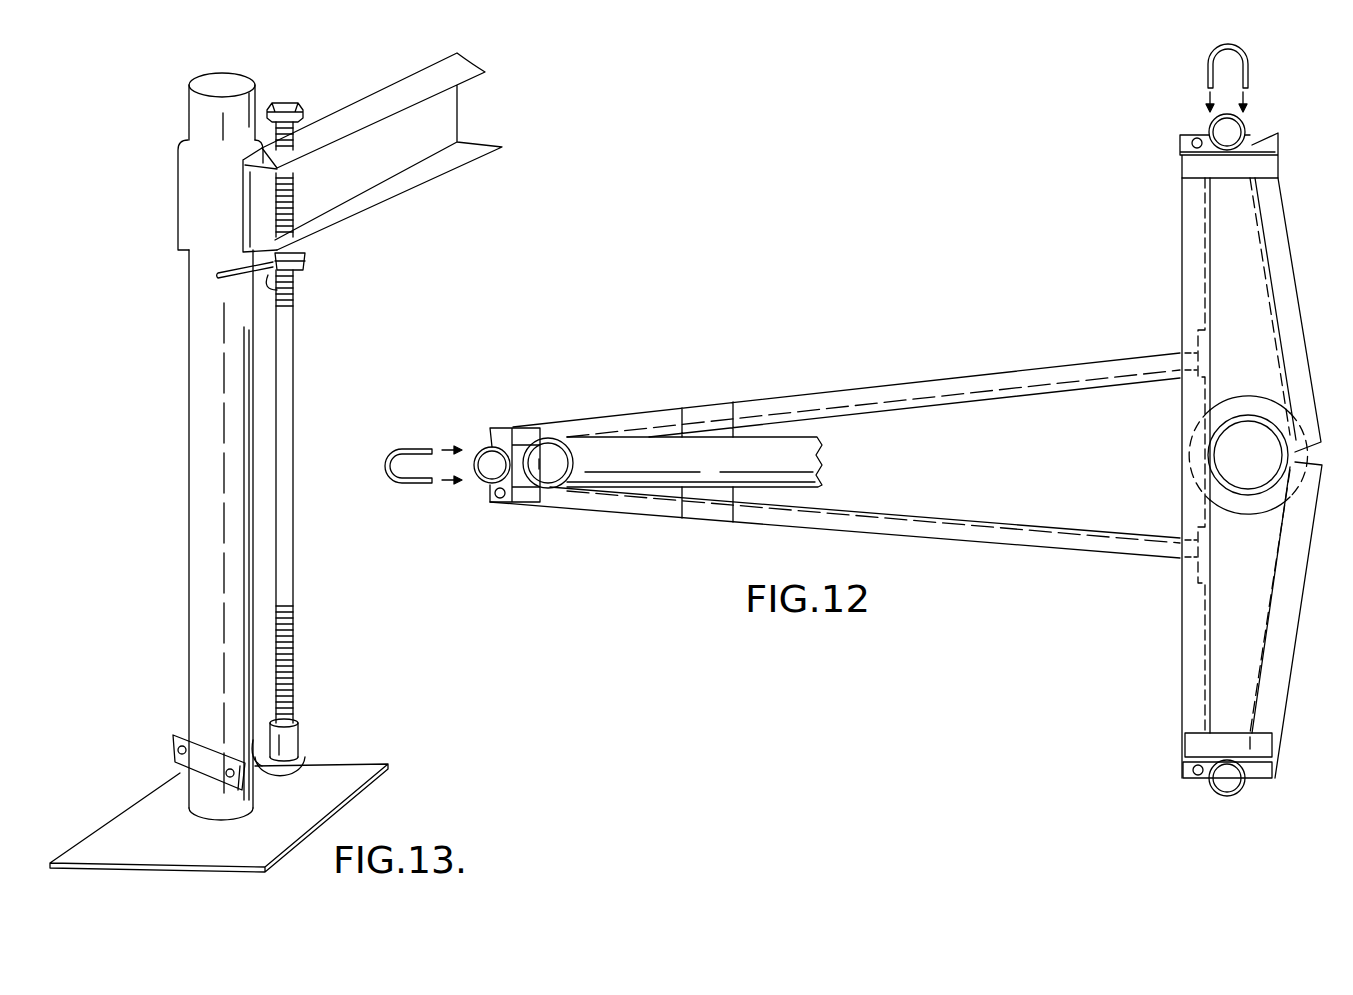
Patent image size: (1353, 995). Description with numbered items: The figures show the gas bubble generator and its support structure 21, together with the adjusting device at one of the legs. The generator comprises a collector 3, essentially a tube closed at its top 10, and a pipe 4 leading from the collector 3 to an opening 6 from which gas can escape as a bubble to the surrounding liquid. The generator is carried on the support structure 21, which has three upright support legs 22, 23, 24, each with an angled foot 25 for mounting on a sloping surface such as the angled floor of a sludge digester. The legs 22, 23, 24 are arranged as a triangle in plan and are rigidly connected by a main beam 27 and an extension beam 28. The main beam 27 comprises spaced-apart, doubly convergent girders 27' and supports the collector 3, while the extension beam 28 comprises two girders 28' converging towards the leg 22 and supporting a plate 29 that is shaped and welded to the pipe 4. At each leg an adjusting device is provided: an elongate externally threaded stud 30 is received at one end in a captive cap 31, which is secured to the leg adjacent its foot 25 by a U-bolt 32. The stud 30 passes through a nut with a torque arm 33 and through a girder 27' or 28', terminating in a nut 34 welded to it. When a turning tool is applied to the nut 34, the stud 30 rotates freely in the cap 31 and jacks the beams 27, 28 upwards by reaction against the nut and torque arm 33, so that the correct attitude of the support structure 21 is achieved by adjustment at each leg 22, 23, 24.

In FIG. 12, the collector 3 is at (1248, 411).
In FIG. 12, the pipe 4 is at (653, 453).
In FIG. 12, the opening 6 is at (549, 453).
In FIG. 12, the top 10 is at (1260, 472).
In FIG. 12, the support structure 21 is at (867, 420).
In FIG. 13, the support leg 22 is at (160, 446).
In FIG. 12, the support leg 22 is at (490, 472).
In FIG. 13, the support leg 23 is at (160, 446).
In FIG. 13, the support leg 24 is at (197, 557).
In FIG. 13, the angled foot 25 is at (293, 818).
In FIG. 12, the main beam 27 is at (1235, 420).
In FIG. 13, the girders 27' is at (372, 152).
In FIG. 12, the girders 27' is at (1235, 478).
In FIG. 12, the extension beam 28 is at (835, 525).
In FIG. 13, the girders 28' is at (372, 152).
In FIG. 12, the girders 28' is at (835, 459).
In FIG. 12, the plate 29 is at (710, 497).
In FIG. 13, the externally threaded stud 30 is at (283, 615).
In FIG. 13, the captive cap 31 is at (302, 733).
In FIG. 13, the U-bolt 32 is at (307, 767).
In FIG. 13, the nut with torque arm 33 is at (295, 290).
In FIG. 13, the nut 34 is at (293, 103).